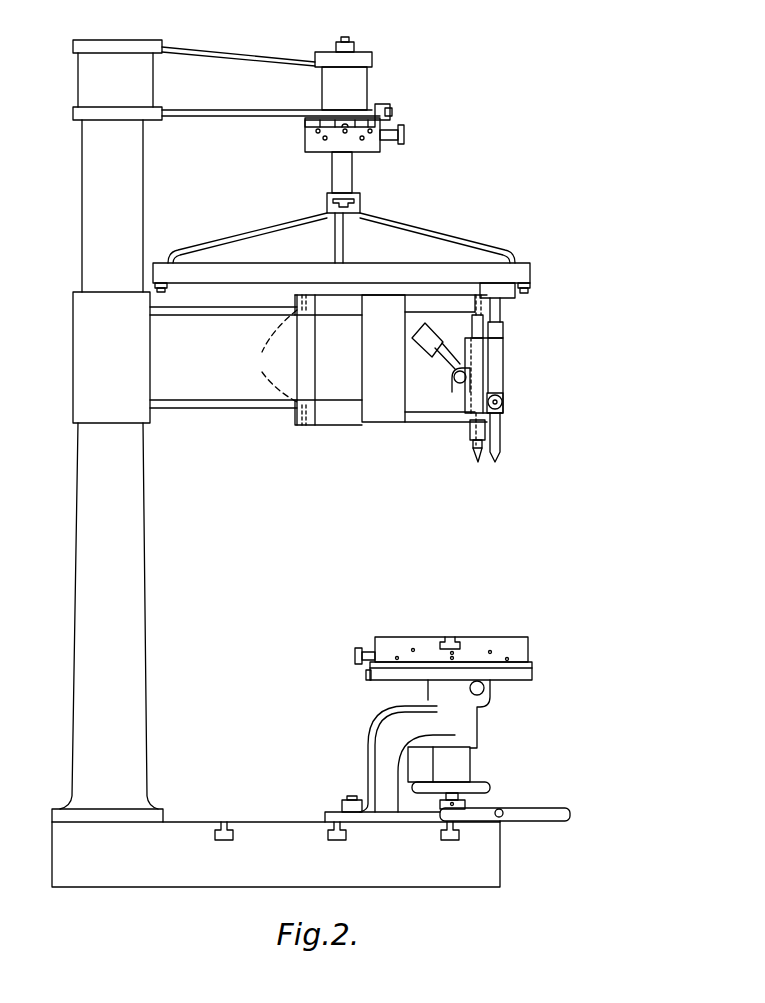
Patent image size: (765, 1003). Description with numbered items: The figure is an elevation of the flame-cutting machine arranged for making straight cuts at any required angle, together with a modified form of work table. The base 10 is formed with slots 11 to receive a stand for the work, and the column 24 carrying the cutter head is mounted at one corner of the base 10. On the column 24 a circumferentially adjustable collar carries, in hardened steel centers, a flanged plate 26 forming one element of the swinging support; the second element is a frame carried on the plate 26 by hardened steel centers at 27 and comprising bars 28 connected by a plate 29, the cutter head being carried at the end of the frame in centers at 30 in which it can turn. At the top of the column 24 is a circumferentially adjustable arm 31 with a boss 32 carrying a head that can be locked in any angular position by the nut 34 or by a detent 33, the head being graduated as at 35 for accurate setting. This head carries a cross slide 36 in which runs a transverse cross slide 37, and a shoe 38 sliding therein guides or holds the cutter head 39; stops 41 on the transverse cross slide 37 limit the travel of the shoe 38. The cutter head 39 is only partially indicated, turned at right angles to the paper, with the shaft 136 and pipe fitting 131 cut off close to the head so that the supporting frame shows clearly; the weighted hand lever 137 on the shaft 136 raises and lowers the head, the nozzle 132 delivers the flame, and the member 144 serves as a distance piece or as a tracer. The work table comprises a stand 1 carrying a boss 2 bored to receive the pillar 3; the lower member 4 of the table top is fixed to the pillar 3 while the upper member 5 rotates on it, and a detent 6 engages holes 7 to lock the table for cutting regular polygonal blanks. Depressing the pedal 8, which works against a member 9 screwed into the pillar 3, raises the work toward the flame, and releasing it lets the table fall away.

The stand 1 is at (385, 743).
The boss 2 is at (468, 724).
The pillar 3 is at (456, 763).
The lower member 4 is at (530, 677).
The upper member 5 is at (522, 648).
The detent 6 is at (354, 657).
The holes 7 is at (398, 656).
The pedal 8 is at (550, 812).
The member 9 is at (455, 800).
The base 10 is at (175, 853).
The slots 11 is at (330, 830).
The column 24 is at (146, 563).
The flanged plate 26 is at (217, 357).
The centers 27 is at (271, 360).
The bars 28 is at (345, 305).
The plate 29 is at (424, 358).
The centers 30 is at (488, 308).
The arm 31 is at (228, 73).
The boss 32 is at (360, 87).
The detent 33 is at (405, 135).
The nut 34 is at (356, 46).
The graduations 35 is at (305, 128).
The cross slide 36 is at (361, 200).
The transverse cross slide 37 is at (447, 258).
The shoe 38 is at (505, 302).
The cutter head 39 is at (497, 366).
The stops 41 is at (168, 262).
The pipe fitting 131 is at (503, 410).
The nozzle 132 is at (502, 448).
The shaft 136 is at (468, 377).
The weighted hand lever 137 is at (443, 357).
The member 144 is at (476, 462).